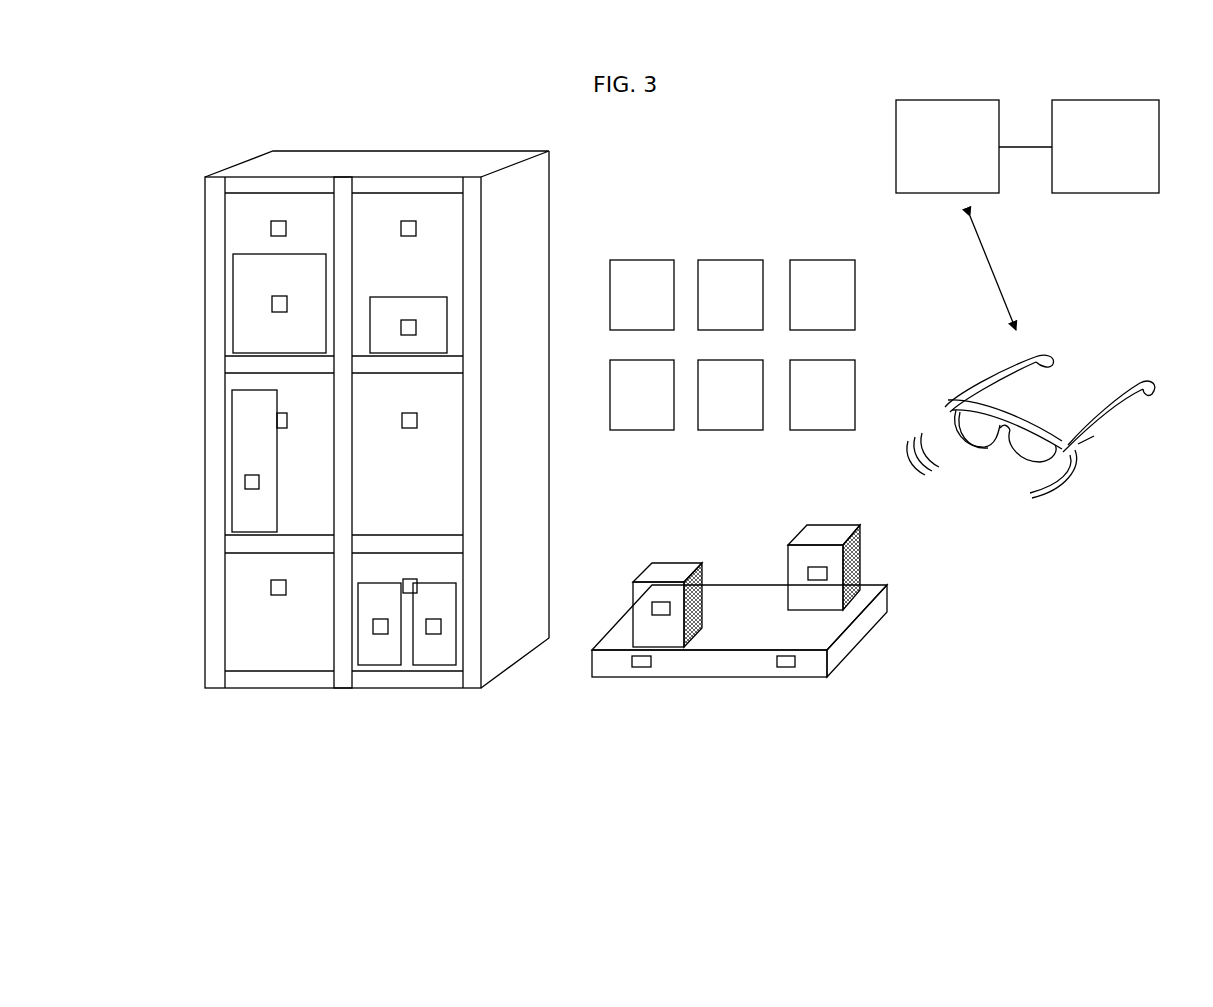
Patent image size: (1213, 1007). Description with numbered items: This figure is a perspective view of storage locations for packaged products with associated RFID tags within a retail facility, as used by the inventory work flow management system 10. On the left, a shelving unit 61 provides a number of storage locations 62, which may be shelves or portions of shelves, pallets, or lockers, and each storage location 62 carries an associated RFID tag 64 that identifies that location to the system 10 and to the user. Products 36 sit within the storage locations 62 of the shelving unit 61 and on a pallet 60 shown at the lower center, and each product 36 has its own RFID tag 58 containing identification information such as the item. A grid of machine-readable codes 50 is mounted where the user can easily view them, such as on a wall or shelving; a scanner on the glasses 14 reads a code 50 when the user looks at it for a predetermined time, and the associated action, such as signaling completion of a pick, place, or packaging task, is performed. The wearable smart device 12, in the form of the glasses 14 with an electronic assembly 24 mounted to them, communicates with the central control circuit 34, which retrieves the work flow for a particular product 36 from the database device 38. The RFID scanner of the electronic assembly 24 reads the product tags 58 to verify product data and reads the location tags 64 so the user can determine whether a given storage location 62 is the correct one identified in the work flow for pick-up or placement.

The inventory work flow management system 10 is at (795, 157).
The wearable smart device 12 is at (1122, 366).
The glasses 14 is at (980, 445).
The electronic assembly 24 is at (1085, 445).
The central control circuit 34 is at (957, 100).
The product 36 is at (233, 254).
The database device 38 is at (1105, 100).
The machine-readable code 50 is at (645, 260).
The RFID tag 58 is at (272, 305).
The pallet 60 is at (592, 663).
The shelving unit 61 is at (548, 197).
The storage location 62 is at (430, 246).
The RFID tag 64 is at (279, 220).